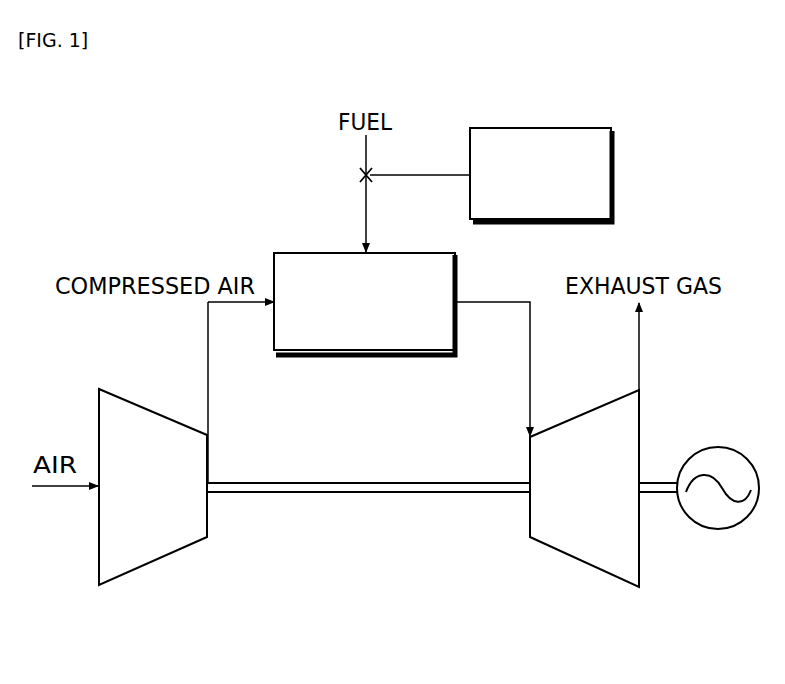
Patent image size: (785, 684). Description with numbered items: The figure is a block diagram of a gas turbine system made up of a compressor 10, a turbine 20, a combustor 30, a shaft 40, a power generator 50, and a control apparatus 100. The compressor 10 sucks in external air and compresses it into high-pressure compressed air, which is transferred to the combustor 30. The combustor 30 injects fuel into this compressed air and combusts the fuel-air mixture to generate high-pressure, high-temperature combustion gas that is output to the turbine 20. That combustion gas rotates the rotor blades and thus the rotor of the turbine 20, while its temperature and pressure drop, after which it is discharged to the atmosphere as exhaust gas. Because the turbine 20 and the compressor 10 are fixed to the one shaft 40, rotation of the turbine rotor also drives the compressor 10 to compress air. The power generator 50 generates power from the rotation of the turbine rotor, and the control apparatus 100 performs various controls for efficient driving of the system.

The compressor 10 is at (153, 562).
The turbine 20 is at (582, 563).
The combustor 30 is at (290, 252).
The shaft 40 is at (298, 495).
The power generator 50 is at (718, 529).
The control apparatus 100 is at (613, 175).